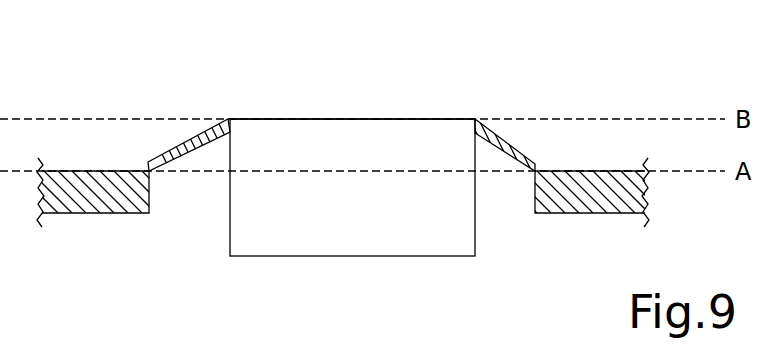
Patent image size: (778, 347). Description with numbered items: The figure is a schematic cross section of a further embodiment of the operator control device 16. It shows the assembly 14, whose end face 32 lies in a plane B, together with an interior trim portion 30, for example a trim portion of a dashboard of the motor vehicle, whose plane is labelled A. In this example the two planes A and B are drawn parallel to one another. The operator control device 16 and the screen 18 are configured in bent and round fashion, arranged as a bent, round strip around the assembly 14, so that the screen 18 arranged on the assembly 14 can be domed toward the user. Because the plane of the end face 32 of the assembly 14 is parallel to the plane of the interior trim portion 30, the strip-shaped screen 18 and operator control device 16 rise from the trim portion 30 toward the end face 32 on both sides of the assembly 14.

The assembly 14 is at (475, 242).
The operator control device 16 is at (349, 112).
The screen 18 is at (203, 138).
The interior trim portion 30 is at (88, 171).
The end face 32 is at (368, 107).